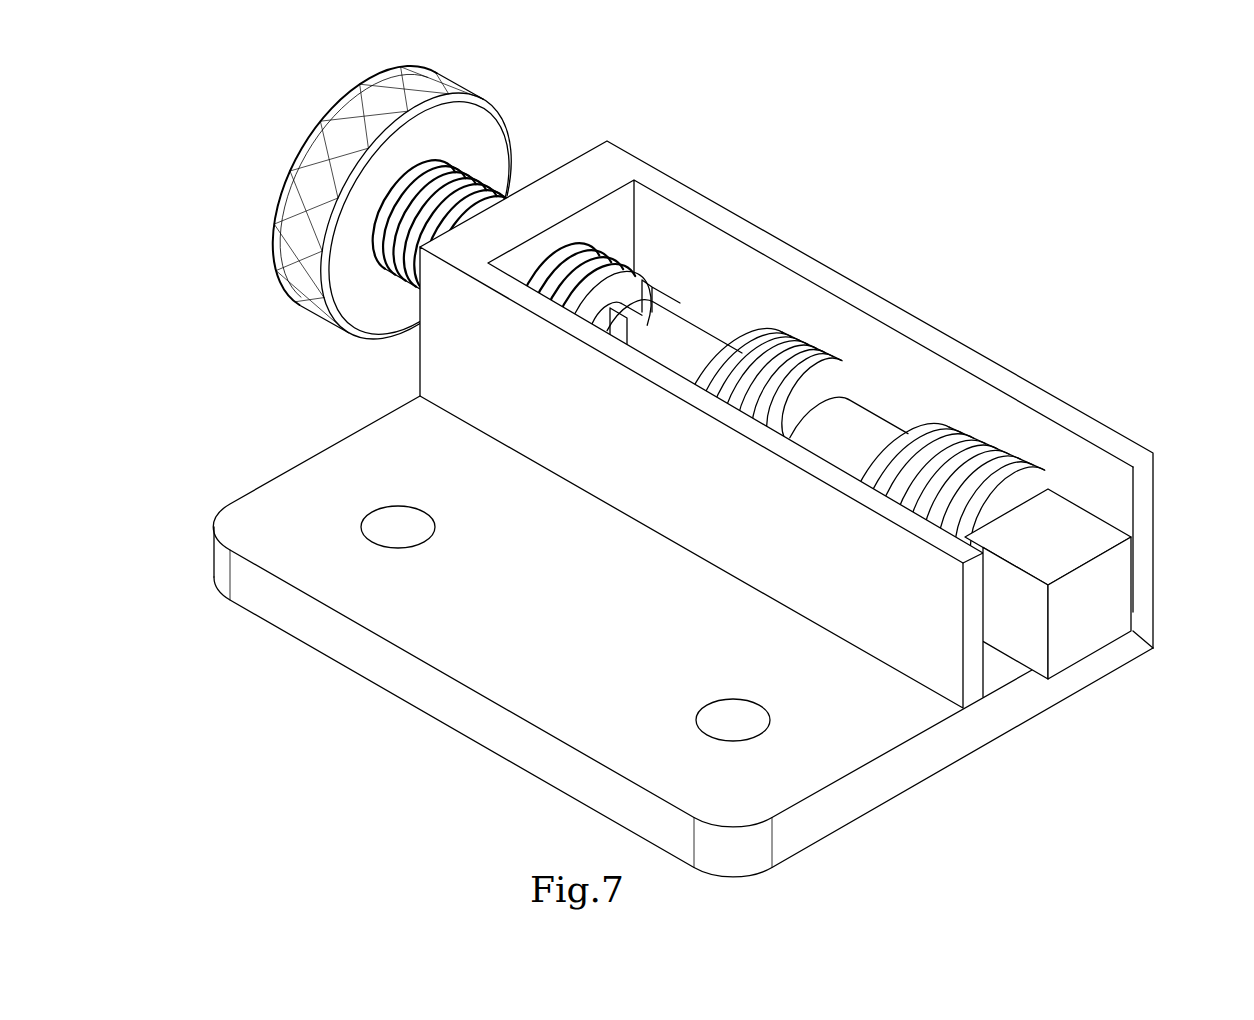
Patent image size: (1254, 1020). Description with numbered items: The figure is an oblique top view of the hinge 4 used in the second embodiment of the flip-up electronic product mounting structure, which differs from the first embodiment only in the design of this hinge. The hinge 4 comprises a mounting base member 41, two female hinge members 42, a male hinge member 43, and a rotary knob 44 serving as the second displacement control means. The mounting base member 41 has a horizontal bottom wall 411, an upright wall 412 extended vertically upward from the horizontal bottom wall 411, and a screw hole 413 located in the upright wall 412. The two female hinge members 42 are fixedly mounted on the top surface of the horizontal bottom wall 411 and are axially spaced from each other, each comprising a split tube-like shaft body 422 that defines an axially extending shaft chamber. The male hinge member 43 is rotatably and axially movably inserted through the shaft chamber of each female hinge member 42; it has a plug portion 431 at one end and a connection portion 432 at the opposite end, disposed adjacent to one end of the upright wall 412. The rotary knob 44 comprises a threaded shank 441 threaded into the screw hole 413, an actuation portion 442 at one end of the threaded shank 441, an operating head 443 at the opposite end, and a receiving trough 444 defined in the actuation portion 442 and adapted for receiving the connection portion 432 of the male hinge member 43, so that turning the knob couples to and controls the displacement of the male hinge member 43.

The hinge 4 is at (853, 272).
The mounting base member 41 is at (268, 505).
The horizontal bottom wall 411 is at (948, 743).
The upright wall 412 is at (578, 242).
The screw hole 413 is at (583, 236).
The female hinge member 42 is at (852, 364).
The split tube-like shaft body 422 is at (818, 360).
The male hinge member 43 is at (896, 418).
The plug portion 431 is at (1124, 596).
The connection portion 432 is at (644, 284).
The rotary knob 44 is at (311, 128).
The threaded shank 441 is at (500, 188).
The actuation portion 442 is at (588, 290).
The operating head 443 is at (290, 215).
The receiving trough 444 is at (634, 276).